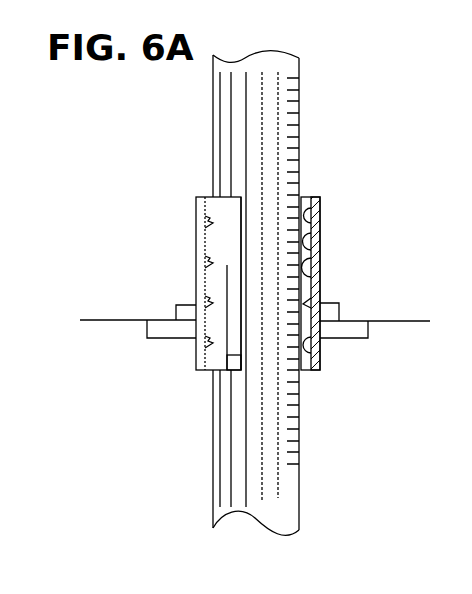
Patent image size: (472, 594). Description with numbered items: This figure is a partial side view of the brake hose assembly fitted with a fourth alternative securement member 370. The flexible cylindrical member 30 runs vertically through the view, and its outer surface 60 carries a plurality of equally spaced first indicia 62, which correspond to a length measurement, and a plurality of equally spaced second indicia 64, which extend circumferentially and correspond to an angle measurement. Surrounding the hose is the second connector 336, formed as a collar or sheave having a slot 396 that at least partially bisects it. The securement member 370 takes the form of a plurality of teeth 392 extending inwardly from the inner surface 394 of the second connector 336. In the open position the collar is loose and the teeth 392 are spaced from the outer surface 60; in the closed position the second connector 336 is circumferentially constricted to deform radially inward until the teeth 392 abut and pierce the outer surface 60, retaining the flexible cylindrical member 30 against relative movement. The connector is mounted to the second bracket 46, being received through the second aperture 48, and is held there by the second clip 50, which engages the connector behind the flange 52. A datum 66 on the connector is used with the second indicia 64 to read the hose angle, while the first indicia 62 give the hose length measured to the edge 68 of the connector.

The flexible cylindrical member 30 is at (272, 60).
The second connector 336 is at (195, 181).
The securement member 370 is at (178, 257).
The slot 396 is at (242, 205).
The datum 66 is at (231, 357).
The flange 52 is at (175, 312).
The second clip 50 is at (147, 328).
The edge 68 is at (303, 372).
The inner surface 394 is at (316, 233).
The teeth 392 is at (320, 200).
The second aperture 48 is at (368, 330).
The second bracket 46 is at (410, 321).
The first indicia 62 is at (288, 472).
The second indicia 64 is at (278, 497).
The outer surface 60 is at (293, 530).